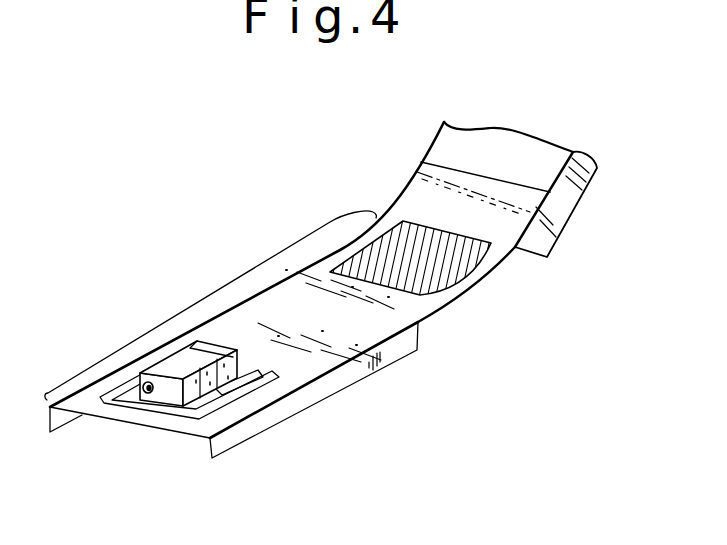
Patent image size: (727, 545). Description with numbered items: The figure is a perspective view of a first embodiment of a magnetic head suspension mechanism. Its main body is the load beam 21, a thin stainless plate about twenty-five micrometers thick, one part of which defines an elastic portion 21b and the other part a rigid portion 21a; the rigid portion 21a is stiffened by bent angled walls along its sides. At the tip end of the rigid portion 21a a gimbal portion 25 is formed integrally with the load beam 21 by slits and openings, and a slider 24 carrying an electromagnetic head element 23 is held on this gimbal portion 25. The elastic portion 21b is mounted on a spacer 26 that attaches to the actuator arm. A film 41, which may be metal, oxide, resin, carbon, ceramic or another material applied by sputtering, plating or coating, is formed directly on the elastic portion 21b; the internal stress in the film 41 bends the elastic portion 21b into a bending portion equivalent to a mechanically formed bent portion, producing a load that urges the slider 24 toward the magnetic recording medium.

The load beam 21 is at (266, 271).
The rigid portion 21a is at (397, 353).
The elastic portion 21b is at (496, 254).
The electromagnetic head element 23 is at (147, 393).
The slider 24 is at (173, 362).
The gimbal portion 25 is at (253, 395).
The spacer 26 is at (565, 207).
The film 41 is at (443, 272).